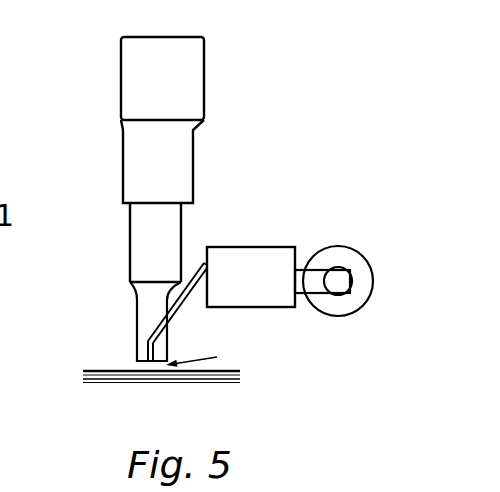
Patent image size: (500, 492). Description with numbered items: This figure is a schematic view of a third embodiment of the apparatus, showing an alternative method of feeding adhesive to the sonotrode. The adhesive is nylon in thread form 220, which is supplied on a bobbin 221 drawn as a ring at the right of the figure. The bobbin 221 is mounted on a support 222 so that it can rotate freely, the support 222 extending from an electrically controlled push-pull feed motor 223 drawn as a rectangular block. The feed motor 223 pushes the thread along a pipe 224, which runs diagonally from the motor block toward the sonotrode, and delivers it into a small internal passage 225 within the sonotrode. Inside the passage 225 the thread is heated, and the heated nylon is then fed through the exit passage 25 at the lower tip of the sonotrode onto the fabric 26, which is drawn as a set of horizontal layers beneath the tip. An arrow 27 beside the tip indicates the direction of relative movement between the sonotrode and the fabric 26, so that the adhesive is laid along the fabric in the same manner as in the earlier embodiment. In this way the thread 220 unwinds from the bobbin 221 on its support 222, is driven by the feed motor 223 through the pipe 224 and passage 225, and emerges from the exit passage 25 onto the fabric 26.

The exit passage 25 is at (145, 357).
The fabric 26 is at (112, 372).
The direction of movement 27 is at (208, 351).
The nylon in thread form 220 is at (301, 291).
The bobbin 221 is at (359, 252).
The support 222 is at (318, 285).
The push-pull feed motor 223 is at (265, 308).
The pipe 224 is at (200, 274).
The internal passage 225 is at (150, 336).